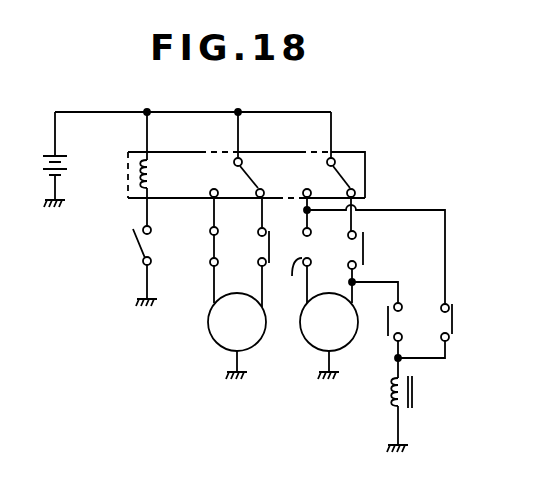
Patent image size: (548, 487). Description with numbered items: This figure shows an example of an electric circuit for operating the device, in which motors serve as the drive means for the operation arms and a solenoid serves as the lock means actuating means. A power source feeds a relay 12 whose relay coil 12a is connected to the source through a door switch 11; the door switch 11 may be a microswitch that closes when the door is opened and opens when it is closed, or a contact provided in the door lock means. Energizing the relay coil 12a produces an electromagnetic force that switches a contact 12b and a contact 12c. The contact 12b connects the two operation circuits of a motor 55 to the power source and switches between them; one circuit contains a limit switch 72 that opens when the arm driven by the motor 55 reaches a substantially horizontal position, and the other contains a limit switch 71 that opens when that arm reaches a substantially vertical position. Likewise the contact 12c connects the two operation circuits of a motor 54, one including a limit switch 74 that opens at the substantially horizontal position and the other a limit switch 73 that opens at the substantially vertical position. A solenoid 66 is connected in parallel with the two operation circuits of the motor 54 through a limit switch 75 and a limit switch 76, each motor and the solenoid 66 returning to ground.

The door switch 11 is at (134, 251).
The relay 12 is at (368, 163).
The relay coil 12a is at (138, 178).
The contact 12b is at (250, 179).
The contact 12c is at (343, 179).
The motor 54 is at (320, 340).
The motor 55 is at (225, 335).
The solenoid 66 is at (414, 392).
The limit switch 71 is at (212, 245).
The limit switch 72 is at (272, 247).
The limit switch 73 is at (294, 263).
The limit switch 74 is at (364, 247).
The limit switch 75 is at (386, 324).
The limit switch 76 is at (452, 320).